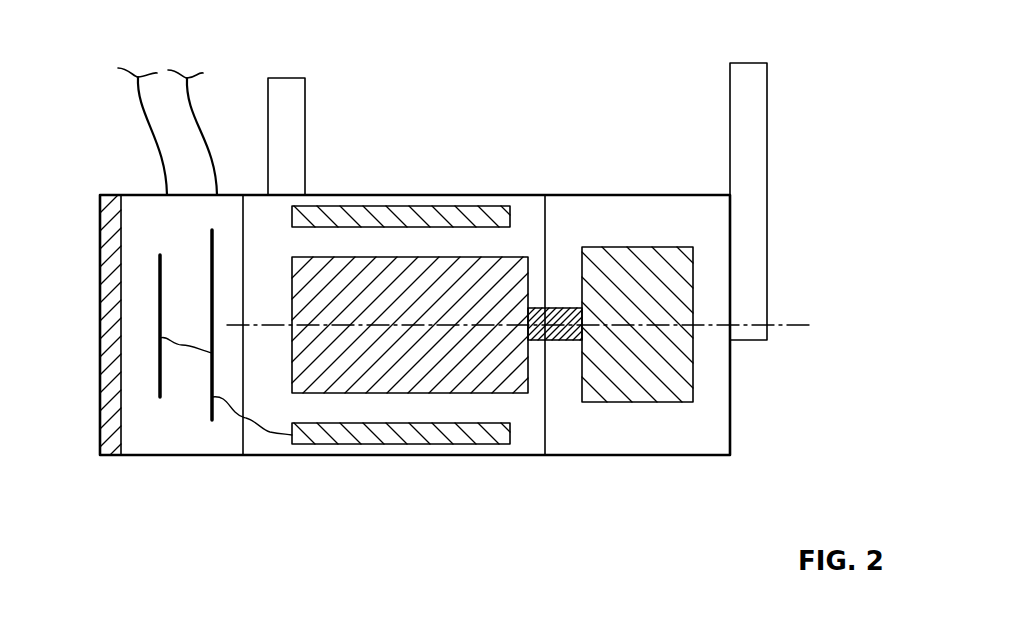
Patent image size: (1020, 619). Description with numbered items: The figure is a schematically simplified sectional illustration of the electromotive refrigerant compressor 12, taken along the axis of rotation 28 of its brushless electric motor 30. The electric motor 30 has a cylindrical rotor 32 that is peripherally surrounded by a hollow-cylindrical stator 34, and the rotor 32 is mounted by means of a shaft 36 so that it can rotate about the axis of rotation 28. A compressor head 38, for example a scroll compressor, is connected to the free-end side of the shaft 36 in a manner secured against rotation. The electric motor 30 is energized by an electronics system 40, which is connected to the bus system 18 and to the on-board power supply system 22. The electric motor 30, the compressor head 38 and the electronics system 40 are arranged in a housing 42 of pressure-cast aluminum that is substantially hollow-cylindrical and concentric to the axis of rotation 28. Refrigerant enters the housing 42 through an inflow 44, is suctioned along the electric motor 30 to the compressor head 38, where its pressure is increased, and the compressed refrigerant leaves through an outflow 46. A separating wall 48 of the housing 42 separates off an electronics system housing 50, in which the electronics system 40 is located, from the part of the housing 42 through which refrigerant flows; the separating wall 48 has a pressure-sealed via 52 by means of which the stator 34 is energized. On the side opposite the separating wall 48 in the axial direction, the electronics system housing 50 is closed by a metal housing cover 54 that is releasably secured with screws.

The electromotive refrigerant compressor 12 is at (827, 112).
The bus system 18 is at (140, 113).
The on-board power supply system 22 is at (192, 108).
The axis of rotation 28 is at (783, 323).
The brushless electric motor 30 is at (466, 165).
The rotor 32 is at (473, 373).
The stator 34 is at (373, 435).
The shaft 36 is at (560, 313).
The compressor head 38 is at (635, 258).
The electronics system 40 is at (180, 420).
The housing 42 is at (408, 195).
The inflow 44 is at (305, 105).
The outflow 46 is at (740, 100).
The separating wall 48 is at (243, 440).
The electronics system housing 50 is at (133, 457).
The via 52 is at (246, 420).
The housing cover 54 is at (102, 317).